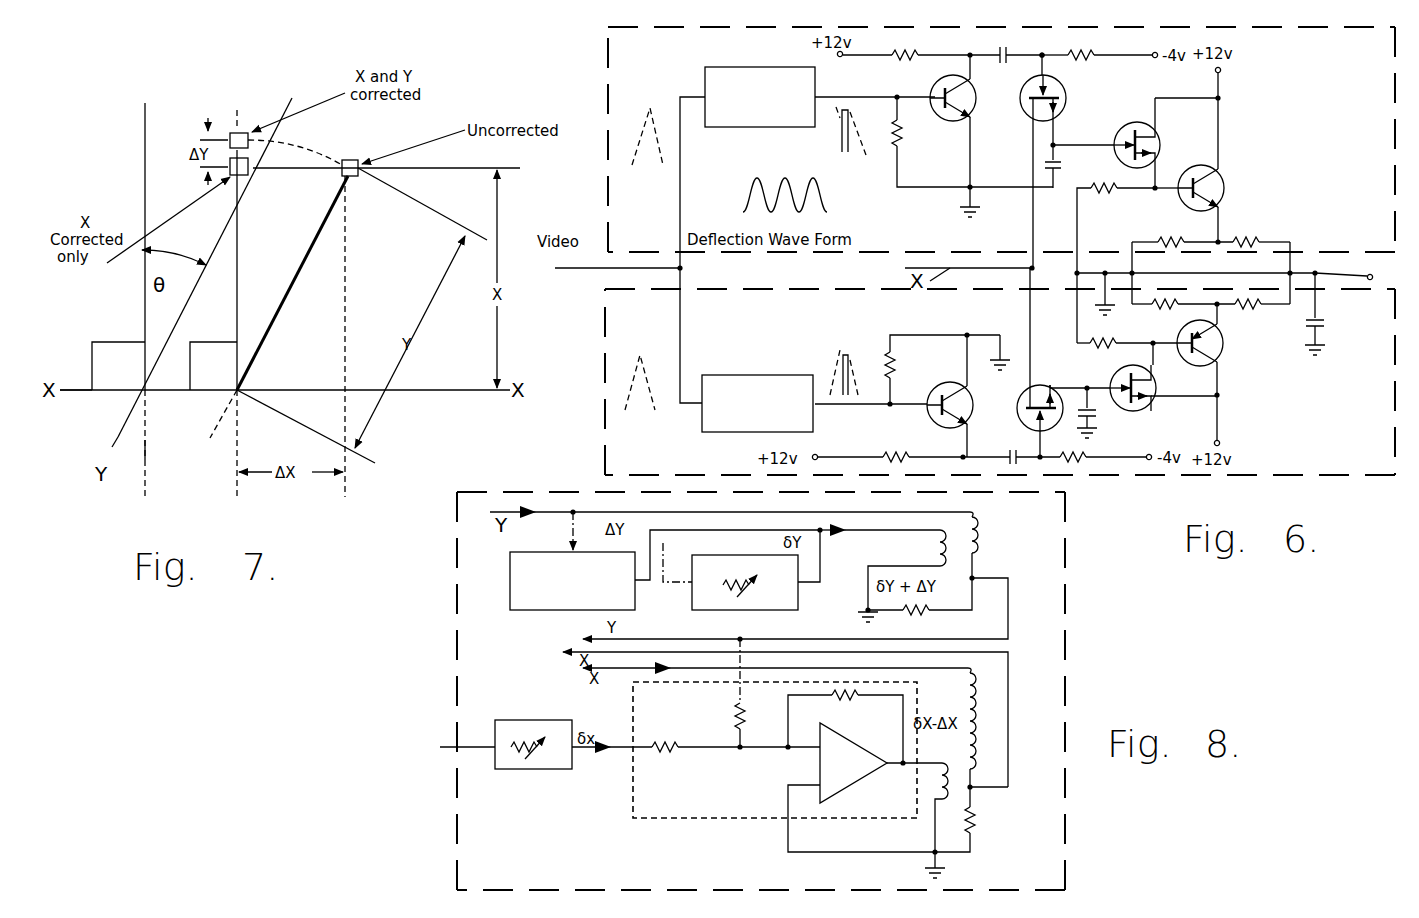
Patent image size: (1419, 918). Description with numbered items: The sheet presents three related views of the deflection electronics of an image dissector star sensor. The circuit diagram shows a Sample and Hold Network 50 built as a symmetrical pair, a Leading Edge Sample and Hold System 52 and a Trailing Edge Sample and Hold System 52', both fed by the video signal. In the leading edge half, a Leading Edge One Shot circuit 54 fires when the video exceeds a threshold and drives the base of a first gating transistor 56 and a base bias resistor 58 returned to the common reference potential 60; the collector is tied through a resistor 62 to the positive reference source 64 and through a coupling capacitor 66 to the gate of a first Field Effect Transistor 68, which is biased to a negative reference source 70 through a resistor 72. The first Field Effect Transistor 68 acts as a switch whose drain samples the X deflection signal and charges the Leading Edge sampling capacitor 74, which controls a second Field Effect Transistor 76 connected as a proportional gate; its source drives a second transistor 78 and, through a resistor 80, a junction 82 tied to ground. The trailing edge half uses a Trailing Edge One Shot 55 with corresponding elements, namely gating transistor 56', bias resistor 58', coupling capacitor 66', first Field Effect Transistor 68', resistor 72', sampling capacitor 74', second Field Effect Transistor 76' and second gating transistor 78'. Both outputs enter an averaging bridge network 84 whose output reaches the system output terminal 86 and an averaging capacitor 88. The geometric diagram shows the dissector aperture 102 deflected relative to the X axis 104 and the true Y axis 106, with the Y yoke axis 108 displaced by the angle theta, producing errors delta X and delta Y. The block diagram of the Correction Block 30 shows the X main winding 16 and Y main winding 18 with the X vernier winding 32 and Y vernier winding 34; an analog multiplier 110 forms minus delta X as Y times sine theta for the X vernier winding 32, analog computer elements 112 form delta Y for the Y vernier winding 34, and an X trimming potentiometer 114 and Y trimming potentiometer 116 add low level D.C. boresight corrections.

In FIG. 7, the dissector aperture 102 is at (349, 159).
In FIG. 7, the X axis 104 is at (80, 393).
In FIG. 7, the Y axis 106 is at (143, 458).
In FIG. 7, the Y yoke axis 108 is at (112, 437).
In FIG. 6, the Sample and Hold Network 50 is at (600, 308).
In FIG. 6, the Leading Edge Sample and Hold System 52 is at (969, 139).
In FIG. 6, the Trailing Edge Sample and Hold System 52' is at (968, 382).
In FIG. 6, the Leading Edge One Shot circuit 54 is at (757, 127).
In FIG. 6, the Trailing Edge One Shot 55 is at (702, 432).
In FIG. 6, the first gating transistor 56 is at (943, 121).
In FIG. 6, the first gating transistor 56' is at (944, 396).
In FIG. 6, the base bias resistor 58 is at (952, 144).
In FIG. 6, the base bias resistor 58' is at (926, 361).
In FIG. 6, the source of common reference potential 60 is at (960, 210).
In FIG. 6, the resistor 62 is at (905, 60).
In FIG. 6, the relatively positive reference source 64 is at (842, 57).
In FIG. 6, the coupling capacitor 66 is at (1015, 71).
In FIG. 6, the coupling capacitor 66' is at (1056, 479).
In FIG. 6, the first Field Effect Transistor 68 is at (1058, 160).
In FIG. 6, the first Field Effect Transistor 68' is at (1020, 362).
In FIG. 6, the relatively negative reference source 70 is at (1153, 60).
In FIG. 6, the resistor 72 is at (1097, 73).
In FIG. 6, the resistor 72' is at (1107, 483).
In FIG. 6, the Leading Edge sampling capacitor 74 is at (1028, 165).
In FIG. 6, the sampling capacitor 74' is at (1107, 412).
In FIG. 6, the second Field Effect Transistor 76 is at (1125, 143).
In FIG. 6, the second Field Effect Transistor 76' is at (1163, 392).
In FIG. 6, the second transistor 78 is at (1201, 170).
In FIG. 6, the second gating transistor 78' is at (1222, 349).
In FIG. 6, the resistor 80 is at (1112, 196).
In FIG. 6, the junction 82 is at (1075, 283).
In FIG. 6, the averaging bridge network 84 is at (1285, 240).
In FIG. 6, the system output terminal 86 is at (1367, 272).
In FIG. 6, the averaging capacitor 88 is at (1321, 318).
In FIG. 8, the X main winding 16 is at (978, 706).
In FIG. 8, the Y main winding 18 is at (980, 549).
In FIG. 8, the Correction Block 30 is at (783, 691).
In FIG. 8, the X vernier winding 32 is at (940, 790).
In FIG. 8, the Y vernier winding 34 is at (934, 547).
In FIG. 8, the analog multiplier circuit 110 is at (712, 820).
In FIG. 8, the analog computer elements 112 is at (532, 606).
In FIG. 8, the X trimming potentiometer 114 is at (572, 770).
In FIG. 8, the Y trimming potentiometer 116 is at (696, 618).